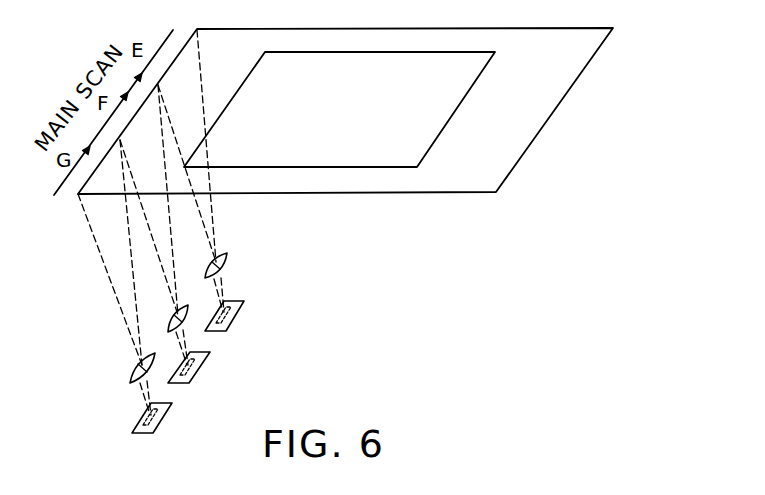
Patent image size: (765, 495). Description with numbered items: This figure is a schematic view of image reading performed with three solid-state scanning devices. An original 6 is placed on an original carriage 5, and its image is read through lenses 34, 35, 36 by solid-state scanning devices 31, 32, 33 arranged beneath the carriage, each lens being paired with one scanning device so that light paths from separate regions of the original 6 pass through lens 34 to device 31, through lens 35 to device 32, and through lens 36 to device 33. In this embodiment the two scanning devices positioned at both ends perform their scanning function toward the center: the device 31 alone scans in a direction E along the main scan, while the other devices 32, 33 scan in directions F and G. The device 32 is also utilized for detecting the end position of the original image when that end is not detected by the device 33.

The original carriage 5 is at (545, 108).
The original 6 is at (450, 56).
The solid-state scanning device 31 is at (236, 318).
The solid-state scanning device 32 is at (207, 367).
The solid-state scanning device 33 is at (173, 417).
The lens 34 is at (225, 256).
The lens 35 is at (172, 319).
The lens 36 is at (132, 363).